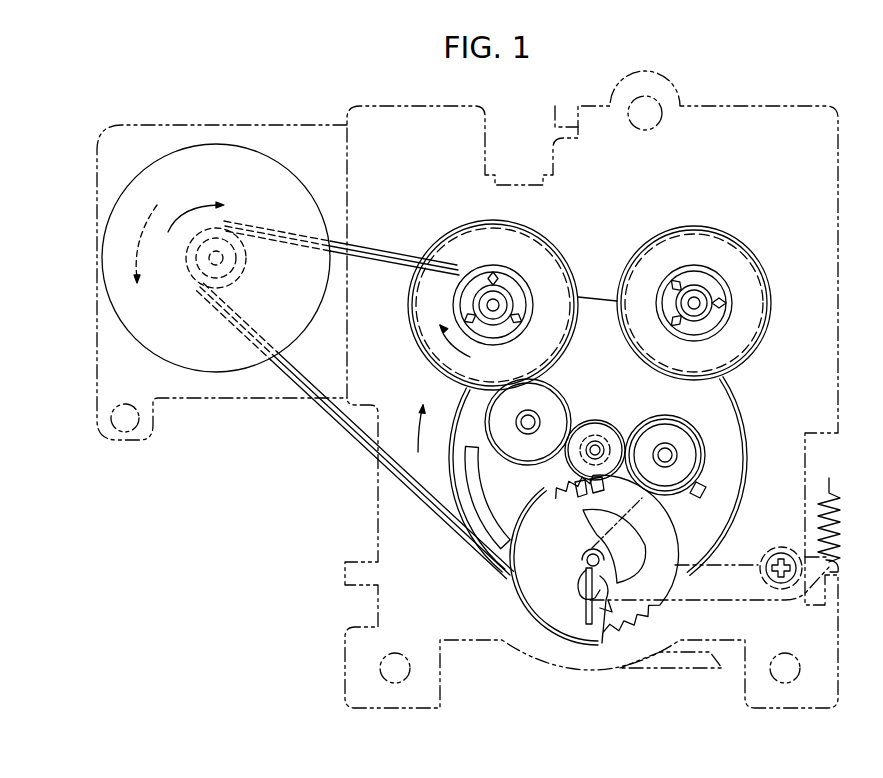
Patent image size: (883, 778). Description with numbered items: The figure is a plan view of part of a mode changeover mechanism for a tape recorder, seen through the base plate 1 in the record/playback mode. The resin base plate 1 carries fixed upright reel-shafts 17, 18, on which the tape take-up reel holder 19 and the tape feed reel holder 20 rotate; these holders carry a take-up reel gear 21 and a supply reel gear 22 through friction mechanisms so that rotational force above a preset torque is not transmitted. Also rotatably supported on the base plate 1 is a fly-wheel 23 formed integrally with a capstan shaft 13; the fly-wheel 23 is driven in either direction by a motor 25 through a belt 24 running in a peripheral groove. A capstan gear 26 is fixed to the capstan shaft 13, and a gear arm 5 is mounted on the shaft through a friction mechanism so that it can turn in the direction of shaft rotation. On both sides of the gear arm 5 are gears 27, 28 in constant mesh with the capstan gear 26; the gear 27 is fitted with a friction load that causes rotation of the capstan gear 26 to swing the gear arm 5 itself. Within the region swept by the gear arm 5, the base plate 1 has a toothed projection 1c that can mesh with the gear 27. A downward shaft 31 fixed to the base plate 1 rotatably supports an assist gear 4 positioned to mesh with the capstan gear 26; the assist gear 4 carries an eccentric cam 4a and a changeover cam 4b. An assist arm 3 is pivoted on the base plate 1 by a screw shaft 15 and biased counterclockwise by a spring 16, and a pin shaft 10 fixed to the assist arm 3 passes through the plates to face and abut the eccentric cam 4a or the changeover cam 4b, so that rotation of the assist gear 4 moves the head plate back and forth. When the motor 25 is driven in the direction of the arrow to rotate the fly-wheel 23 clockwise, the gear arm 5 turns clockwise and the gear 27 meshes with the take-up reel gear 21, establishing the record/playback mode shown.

The base plate 1 is at (800, 104).
The toothed projection 1c is at (487, 477).
The assist arm 3 is at (733, 600).
The assist gear 4 is at (556, 642).
The eccentric cam 4a is at (660, 545).
The changeover cam 4b is at (580, 587).
The gear arm 5 is at (700, 438).
The pin shaft 10 is at (601, 612).
The capstan shaft 13 is at (594, 447).
The screw shaft 15 is at (778, 556).
The spring 16 is at (841, 520).
The reel-shaft 17 is at (490, 300).
The reel-shaft 18 is at (695, 298).
The tape take-up reel holder 19 is at (463, 284).
The tape feed reel holder 20 is at (676, 270).
The take-up reel gear 21 is at (490, 222).
The supply reel gear 22 is at (748, 258).
The fly-wheel 23 is at (718, 395).
The belt 24 is at (339, 418).
The motor 25 is at (213, 366).
The capstan gear 26 is at (608, 432).
The gear 27 is at (490, 410).
The gear 28 is at (708, 456).
The downward shaft 31 is at (586, 556).